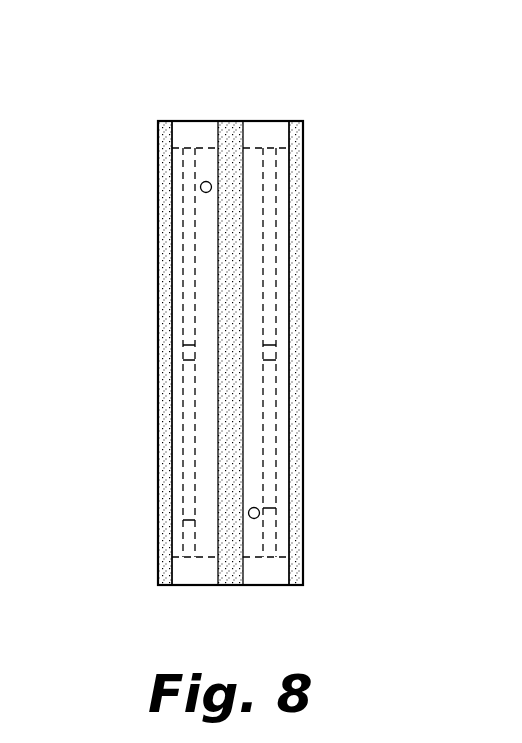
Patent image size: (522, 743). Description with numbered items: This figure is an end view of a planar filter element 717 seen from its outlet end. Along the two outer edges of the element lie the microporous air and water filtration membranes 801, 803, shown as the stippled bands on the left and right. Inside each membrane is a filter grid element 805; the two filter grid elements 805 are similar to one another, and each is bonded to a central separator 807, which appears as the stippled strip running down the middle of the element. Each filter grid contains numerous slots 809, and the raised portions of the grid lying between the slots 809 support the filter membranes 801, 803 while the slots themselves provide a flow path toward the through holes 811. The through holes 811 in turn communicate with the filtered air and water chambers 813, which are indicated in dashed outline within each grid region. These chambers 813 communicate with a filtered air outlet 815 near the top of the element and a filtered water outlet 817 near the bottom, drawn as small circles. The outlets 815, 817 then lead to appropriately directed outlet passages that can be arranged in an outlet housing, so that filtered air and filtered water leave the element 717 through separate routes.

The filter element 717 is at (317, 172).
The microporous air filtration membrane 801 is at (168, 193).
The microporous water filtration membrane 803 is at (297, 408).
The filter grid element 805 is at (203, 125).
The separator 807 is at (233, 125).
The slot 809 is at (173, 418).
The through hole 811 is at (188, 350).
The filtered air and water chamber 813 is at (197, 262).
The filtered air outlet 815 is at (203, 183).
The filtered water outlet 817 is at (259, 512).